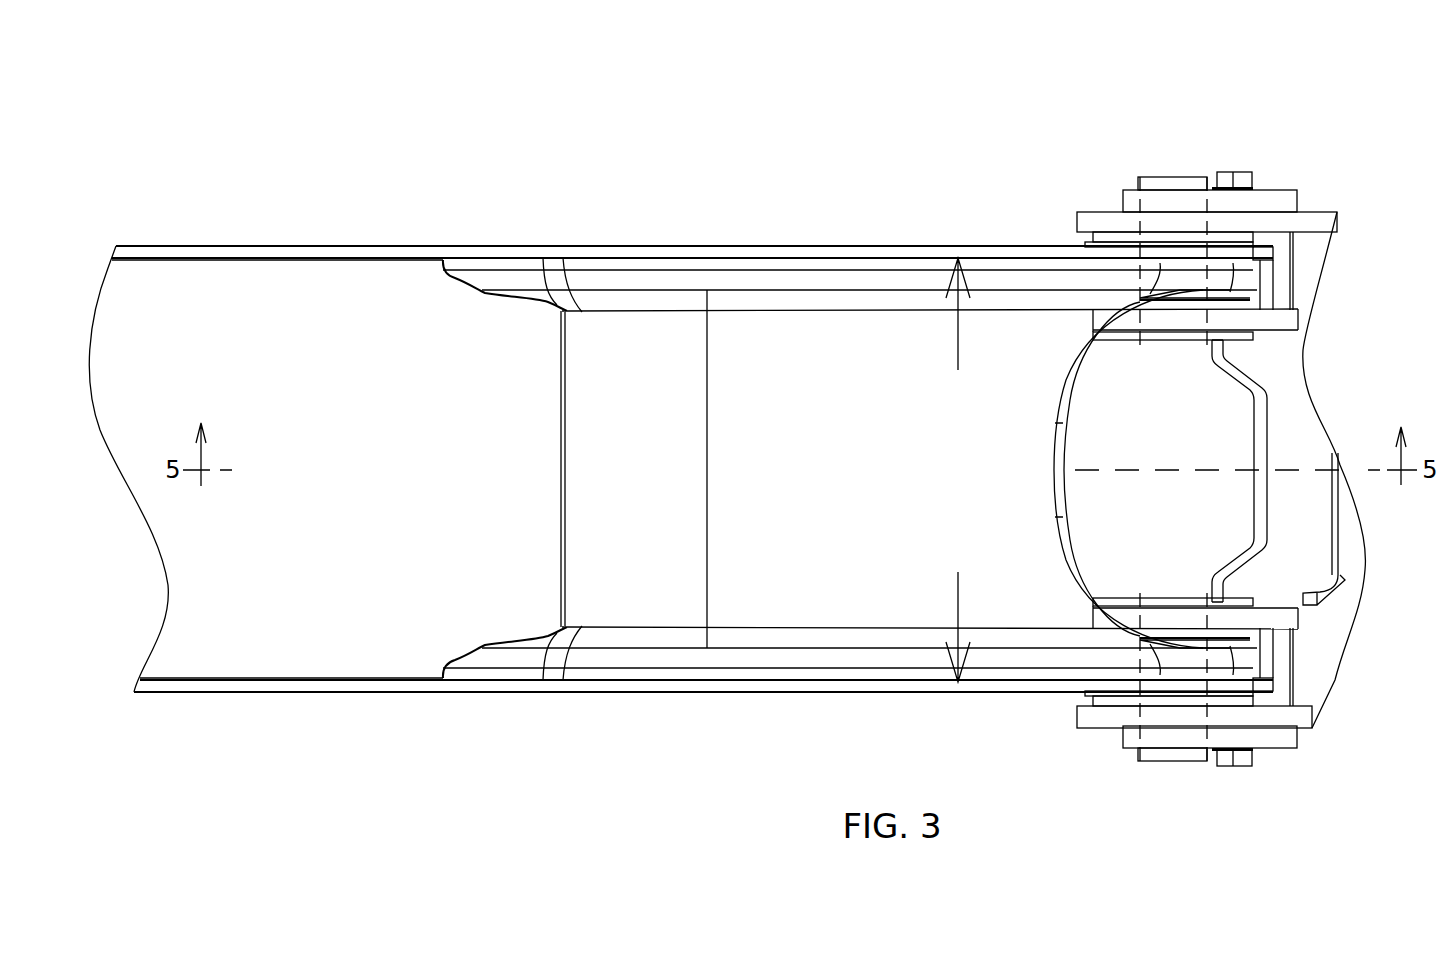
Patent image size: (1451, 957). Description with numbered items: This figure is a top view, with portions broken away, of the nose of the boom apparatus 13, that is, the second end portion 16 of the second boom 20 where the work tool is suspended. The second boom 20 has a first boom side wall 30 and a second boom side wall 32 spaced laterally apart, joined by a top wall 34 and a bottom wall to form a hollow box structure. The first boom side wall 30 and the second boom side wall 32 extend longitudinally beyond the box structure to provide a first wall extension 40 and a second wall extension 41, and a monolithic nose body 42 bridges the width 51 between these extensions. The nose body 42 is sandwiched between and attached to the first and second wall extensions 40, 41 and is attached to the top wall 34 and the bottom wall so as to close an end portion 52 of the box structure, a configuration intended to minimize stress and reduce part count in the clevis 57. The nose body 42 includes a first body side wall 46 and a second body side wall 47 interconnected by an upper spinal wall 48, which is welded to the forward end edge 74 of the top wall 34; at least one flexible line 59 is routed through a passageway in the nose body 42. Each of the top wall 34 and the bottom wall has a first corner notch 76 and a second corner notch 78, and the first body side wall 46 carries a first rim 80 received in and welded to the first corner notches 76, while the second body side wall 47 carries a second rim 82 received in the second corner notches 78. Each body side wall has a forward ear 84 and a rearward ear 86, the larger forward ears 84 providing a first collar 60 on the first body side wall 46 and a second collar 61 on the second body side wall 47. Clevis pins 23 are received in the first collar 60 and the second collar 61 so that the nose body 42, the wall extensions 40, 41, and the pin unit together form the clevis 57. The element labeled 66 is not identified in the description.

The boom apparatus 13 is at (377, 97).
The second end portion 16 is at (345, 197).
The second boom 20 is at (793, 232).
The clevis pin 23 is at (1162, 176).
The first boom side wall 30 is at (422, 702).
The second boom side wall 32 is at (475, 227).
The top wall 34 is at (532, 533).
The first wall extension 40 is at (970, 695).
The second wall extension 41 is at (867, 252).
The nose body 42 is at (771, 662).
The first body side wall 46 is at (811, 660).
The second body side wall 47 is at (817, 280).
The spinal wall 48 is at (823, 472).
The width 51 is at (958, 592).
The end portion 52 is at (520, 448).
The clevis 57 is at (1256, 320).
The flexible line 59 is at (1145, 470).
The first collar 60 is at (1227, 650).
The second collar 61 is at (1248, 292).
The curved band 66 is at (1068, 390).
The forward end edge 74 is at (563, 483).
The first corner notch 76 is at (487, 648).
The second corner notch 78 is at (480, 292).
The first rim 80 is at (745, 660).
The second rim 82 is at (753, 280).
The forward ear 84 is at (1245, 265).
The rearward ear 86 is at (510, 278).